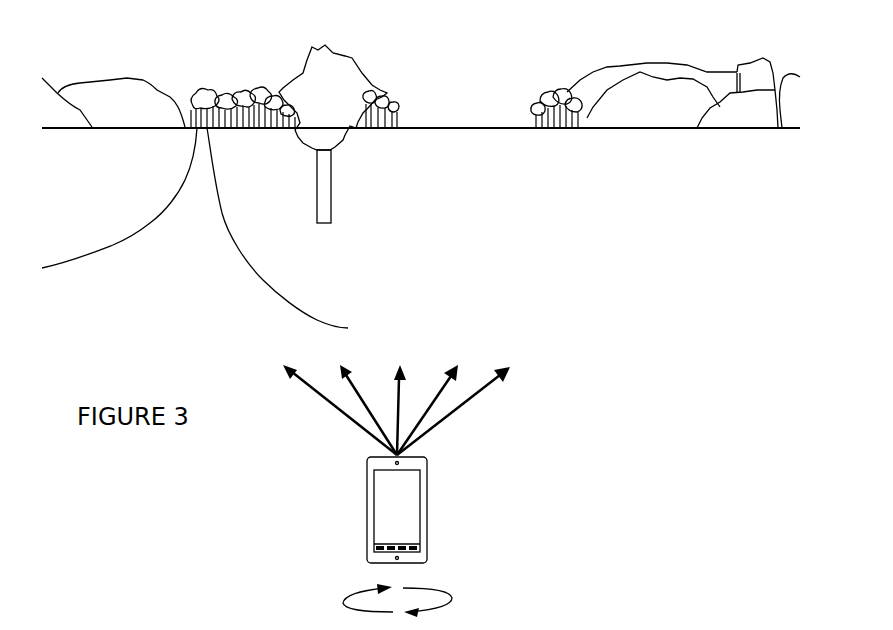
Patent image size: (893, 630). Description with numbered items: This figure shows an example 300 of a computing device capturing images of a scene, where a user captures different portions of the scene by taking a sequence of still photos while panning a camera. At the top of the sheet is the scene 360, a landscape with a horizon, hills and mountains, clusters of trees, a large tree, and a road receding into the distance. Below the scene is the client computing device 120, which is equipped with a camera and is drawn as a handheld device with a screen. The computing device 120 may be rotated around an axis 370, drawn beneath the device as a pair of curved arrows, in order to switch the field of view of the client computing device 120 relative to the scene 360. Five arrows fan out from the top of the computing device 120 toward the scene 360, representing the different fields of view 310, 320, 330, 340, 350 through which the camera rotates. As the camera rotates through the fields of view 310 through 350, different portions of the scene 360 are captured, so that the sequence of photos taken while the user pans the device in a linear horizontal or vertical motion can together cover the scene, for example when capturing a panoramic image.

The example 300 is at (150, 383).
The scene 360 is at (421, 200).
The client computing device 120 is at (428, 513).
The field of view 310 is at (370, 435).
The field of view 320 is at (367, 412).
The field of view 330 is at (405, 433).
The field of view 340 is at (427, 415).
The field of view 350 is at (473, 400).
The axis 370 is at (448, 598).